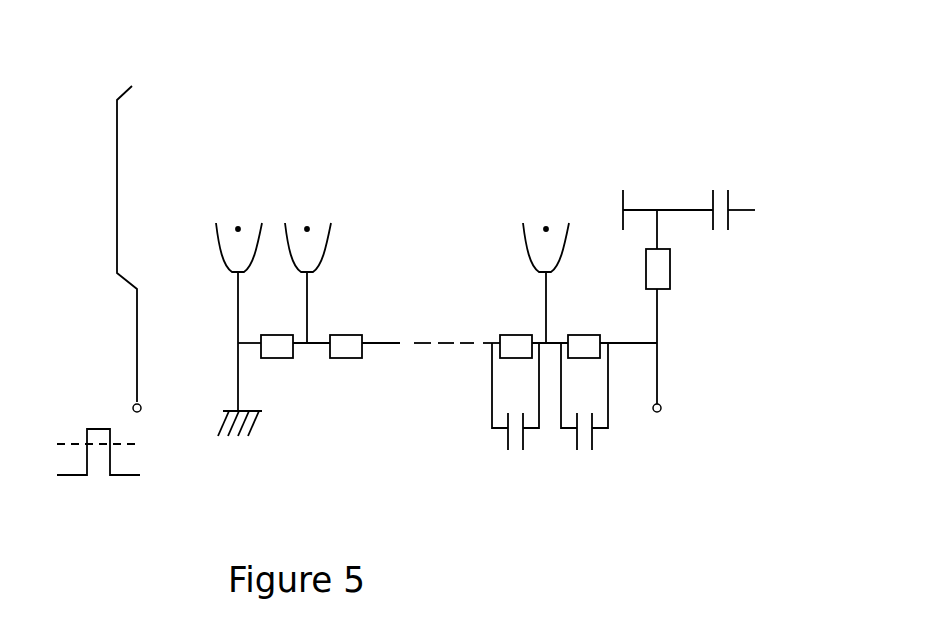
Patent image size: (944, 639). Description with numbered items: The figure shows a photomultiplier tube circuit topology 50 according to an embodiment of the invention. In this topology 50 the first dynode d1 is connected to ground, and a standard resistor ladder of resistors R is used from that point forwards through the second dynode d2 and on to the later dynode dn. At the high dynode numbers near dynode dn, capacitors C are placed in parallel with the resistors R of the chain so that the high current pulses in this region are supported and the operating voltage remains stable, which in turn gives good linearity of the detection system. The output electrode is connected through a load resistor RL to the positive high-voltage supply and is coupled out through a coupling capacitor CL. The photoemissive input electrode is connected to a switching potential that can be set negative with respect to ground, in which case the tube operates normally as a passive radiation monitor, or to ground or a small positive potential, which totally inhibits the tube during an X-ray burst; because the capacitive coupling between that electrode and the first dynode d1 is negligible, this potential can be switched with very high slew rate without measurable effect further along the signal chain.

The circuit topology 50 is at (570, 85).
The first dynode d1 is at (239, 298).
The second dynode d2 is at (308, 264).
The dynode dn is at (546, 264).
The divider resistor R is at (430, 366).
The decoupling capacitor C is at (550, 420).
The load resistor RL is at (675, 272).
The coupling capacitor CL is at (727, 193).